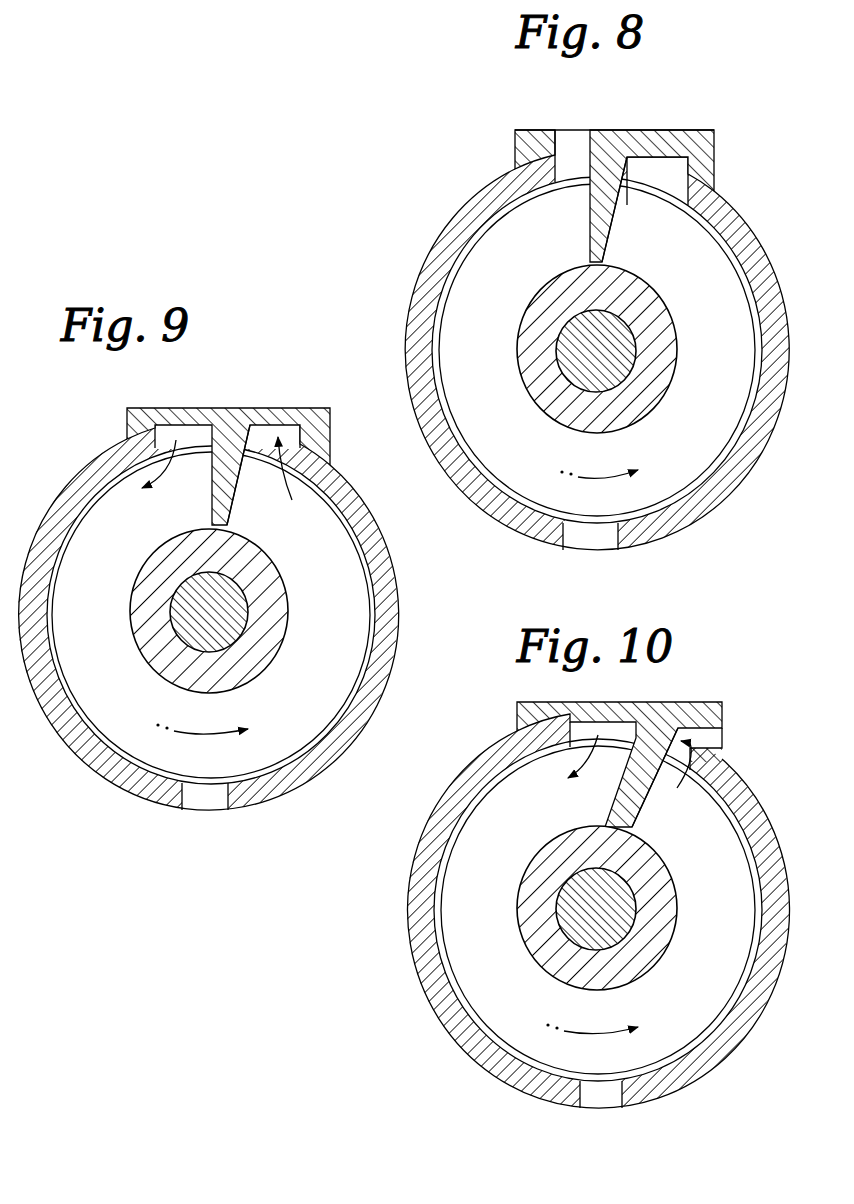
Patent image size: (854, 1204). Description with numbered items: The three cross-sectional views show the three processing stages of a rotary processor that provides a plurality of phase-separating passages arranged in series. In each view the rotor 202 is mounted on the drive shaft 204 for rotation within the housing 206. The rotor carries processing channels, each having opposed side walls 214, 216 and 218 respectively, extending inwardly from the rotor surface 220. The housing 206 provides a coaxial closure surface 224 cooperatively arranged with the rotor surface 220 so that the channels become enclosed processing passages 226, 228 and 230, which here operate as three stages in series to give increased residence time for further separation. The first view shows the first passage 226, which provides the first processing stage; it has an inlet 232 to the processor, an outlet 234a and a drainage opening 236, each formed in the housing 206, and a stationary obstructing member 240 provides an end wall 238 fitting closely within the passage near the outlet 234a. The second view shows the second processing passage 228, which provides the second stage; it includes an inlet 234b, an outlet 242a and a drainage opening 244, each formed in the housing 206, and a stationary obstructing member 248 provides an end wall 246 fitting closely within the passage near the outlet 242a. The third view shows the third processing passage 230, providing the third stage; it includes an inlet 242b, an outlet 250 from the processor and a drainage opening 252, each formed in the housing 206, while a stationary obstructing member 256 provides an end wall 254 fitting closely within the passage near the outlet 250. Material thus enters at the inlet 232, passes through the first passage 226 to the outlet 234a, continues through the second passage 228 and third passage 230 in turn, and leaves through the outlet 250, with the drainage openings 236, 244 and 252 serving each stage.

In FIG. 8, the rotor 202 is at (556, 300).
In FIG. 9, the rotor 202 is at (147, 588).
In FIG. 10, the rotor 202 is at (556, 866).
In FIG. 8, the drive shaft 204 is at (576, 364).
In FIG. 9, the drive shaft 204 is at (209, 612).
In FIG. 10, the drive shaft 204 is at (596, 909).
In FIG. 8, the housing 206 is at (607, 331).
In FIG. 9, the housing 206 is at (235, 610).
In FIG. 10, the housing 206 is at (574, 911).
In FIG. 8, the opposed side walls 214 is at (708, 407).
In FIG. 9, the opposed side walls 216 is at (300, 698).
In FIG. 10, the opposed side walls 218 is at (690, 1008).
In FIG. 8, the rotor surface 220 is at (718, 228).
In FIG. 9, the rotor surface 220 is at (350, 502).
In FIG. 10, the rotor surface 220 is at (440, 958).
In FIG. 8, the coaxial closure surface 224 is at (722, 280).
In FIG. 9, the coaxial closure surface 224 is at (355, 549).
In FIG. 10, the coaxial closure surface 224 is at (478, 1014).
In FIG. 8, the first passage 226 is at (697, 350).
In FIG. 9, the second processing passage 228 is at (297, 655).
In FIG. 10, the third processing passage 230 is at (697, 918).
In FIG. 8, the inlet 232 is at (574, 142).
In FIG. 8, the outlet 234a is at (662, 165).
In FIG. 9, the inlet 234b is at (183, 428).
In FIG. 8, the drainage opening 236 is at (590, 546).
In FIG. 8, the end wall 238 is at (618, 230).
In FIG. 8, the stationary obstructing member 240 is at (606, 170).
In FIG. 9, the outlet 242a is at (292, 435).
In FIG. 10, the inlet 242b is at (586, 730).
In FIG. 9, the drainage opening 244 is at (202, 800).
In FIG. 9, the end wall 246 is at (233, 488).
In FIG. 9, the stationary obstructing member 248 is at (233, 433).
In FIG. 10, the outlet 250 is at (728, 730).
In FIG. 10, the drainage opening 252 is at (603, 1100).
In FIG. 10, the end wall 254 is at (644, 808).
In FIG. 10, the stationary obstructing member 256 is at (662, 728).